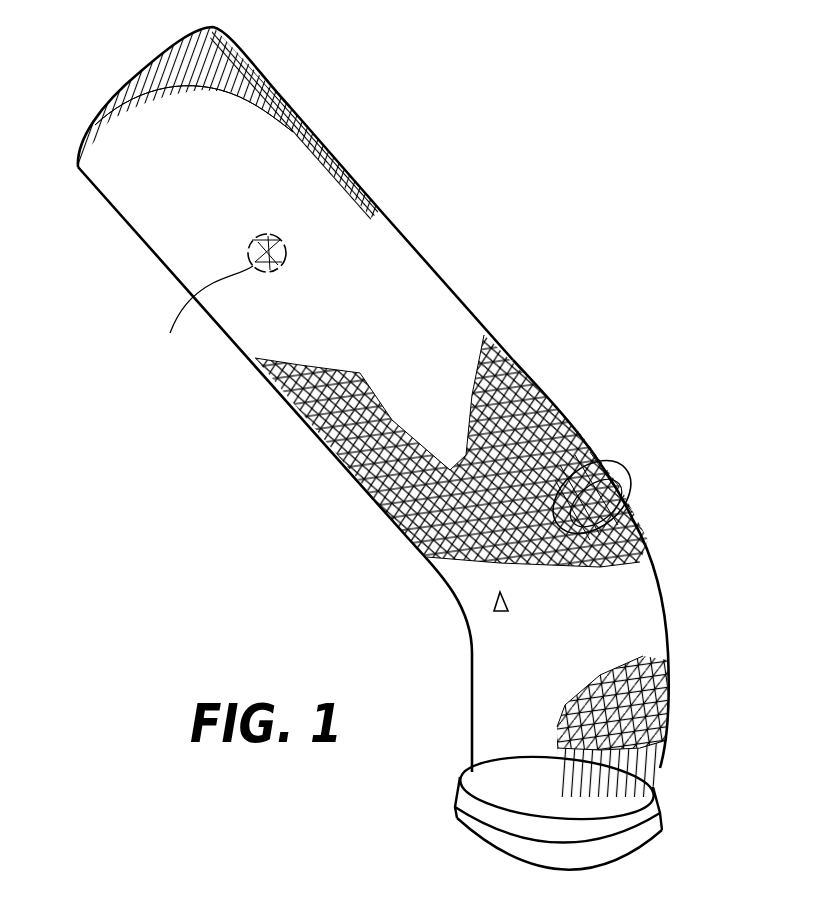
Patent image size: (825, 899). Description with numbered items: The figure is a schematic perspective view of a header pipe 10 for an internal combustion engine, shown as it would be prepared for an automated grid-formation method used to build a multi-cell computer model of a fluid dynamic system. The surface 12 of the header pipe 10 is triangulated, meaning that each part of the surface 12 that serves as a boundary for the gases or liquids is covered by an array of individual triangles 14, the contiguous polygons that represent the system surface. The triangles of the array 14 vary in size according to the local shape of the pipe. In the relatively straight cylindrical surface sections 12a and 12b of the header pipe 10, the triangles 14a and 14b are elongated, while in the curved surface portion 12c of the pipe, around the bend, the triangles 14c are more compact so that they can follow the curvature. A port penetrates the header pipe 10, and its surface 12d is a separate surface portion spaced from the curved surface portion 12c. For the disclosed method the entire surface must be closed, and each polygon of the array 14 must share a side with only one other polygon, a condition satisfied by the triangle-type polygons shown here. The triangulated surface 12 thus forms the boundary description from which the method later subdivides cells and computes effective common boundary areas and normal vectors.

The header pipe 10 is at (405, 448).
The surface 12 is at (378, 441).
The cylindrical surface section 12a is at (660, 750).
The cylindrical surface section 12b is at (118, 211).
The curved surface portion 12c is at (400, 537).
The port surface 12d is at (590, 492).
The array of triangles 14 is at (373, 448).
The elongated triangles 14a is at (462, 779).
The elongated triangles 14b is at (283, 131).
The compact triangles 14c is at (496, 604).